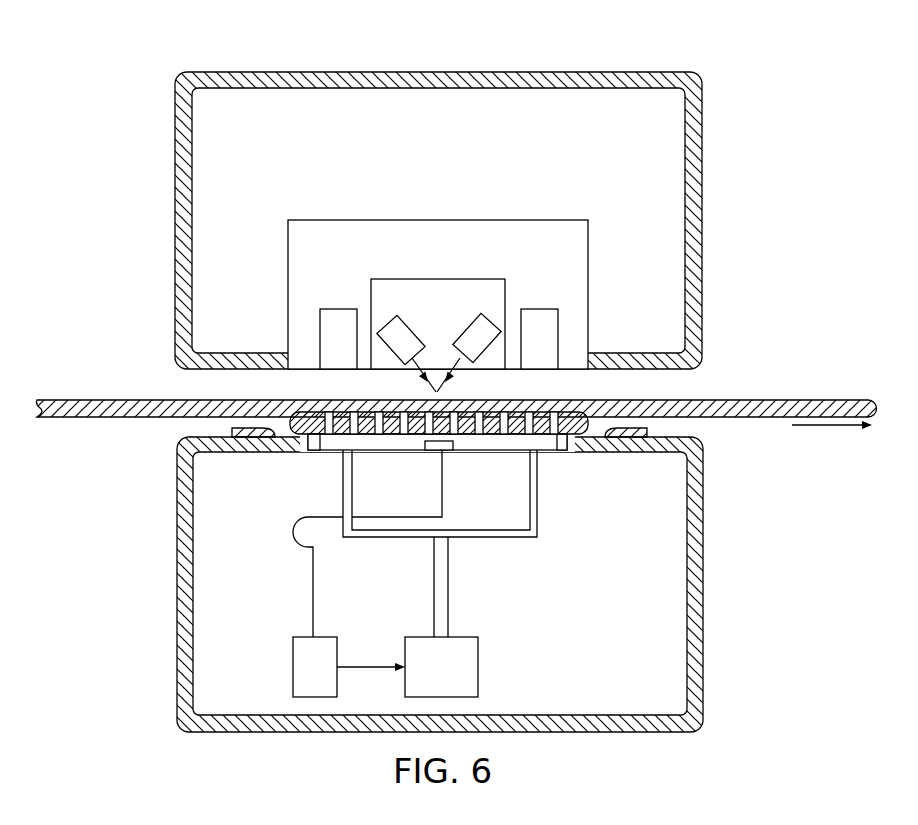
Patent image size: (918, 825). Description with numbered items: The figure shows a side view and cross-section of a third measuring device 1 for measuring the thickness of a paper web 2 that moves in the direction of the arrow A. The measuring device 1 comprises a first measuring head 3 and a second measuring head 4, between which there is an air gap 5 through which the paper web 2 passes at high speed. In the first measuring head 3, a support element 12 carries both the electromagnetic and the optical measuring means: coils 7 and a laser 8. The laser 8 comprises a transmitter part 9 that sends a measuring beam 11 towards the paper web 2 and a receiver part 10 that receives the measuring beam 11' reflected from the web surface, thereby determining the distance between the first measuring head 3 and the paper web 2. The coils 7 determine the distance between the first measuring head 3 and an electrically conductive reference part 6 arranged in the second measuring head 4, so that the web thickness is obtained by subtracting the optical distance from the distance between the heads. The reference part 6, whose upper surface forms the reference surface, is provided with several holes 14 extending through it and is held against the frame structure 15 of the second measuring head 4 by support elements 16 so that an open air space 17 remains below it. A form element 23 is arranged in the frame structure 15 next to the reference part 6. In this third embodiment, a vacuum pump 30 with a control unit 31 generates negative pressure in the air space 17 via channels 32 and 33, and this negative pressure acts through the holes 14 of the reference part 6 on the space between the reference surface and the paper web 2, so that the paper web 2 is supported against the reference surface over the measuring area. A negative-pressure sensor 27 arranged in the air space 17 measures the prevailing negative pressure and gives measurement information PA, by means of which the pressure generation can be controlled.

The measuring device 1 is at (85, 128).
The paper web 2 is at (813, 403).
The first measuring head 3 is at (513, 100).
The second measuring head 4 is at (668, 633).
The air gap 5 is at (704, 381).
The reference part 6 is at (585, 428).
The coil 7 is at (348, 317).
The laser 8 is at (387, 290).
The transmitter part 9 is at (392, 327).
The receiver part 10 is at (487, 325).
The measuring beam 11 is at (420, 342).
The reflected measuring beam 11' is at (461, 339).
The support element 12 is at (316, 228).
The holes 14 is at (380, 430).
The frame structure 15 is at (692, 548).
The support element 16 is at (314, 452).
The air space 17 is at (515, 440).
The form element 23 is at (620, 440).
The negative-pressure sensor 27 is at (443, 442).
The vacuum pump 30 is at (463, 668).
The control unit 31 is at (300, 673).
The channel 32 is at (442, 577).
The channel 33 is at (533, 508).
The direction of movement of paper web A is at (813, 428).
The measurement information on negative pressure PA is at (298, 579).